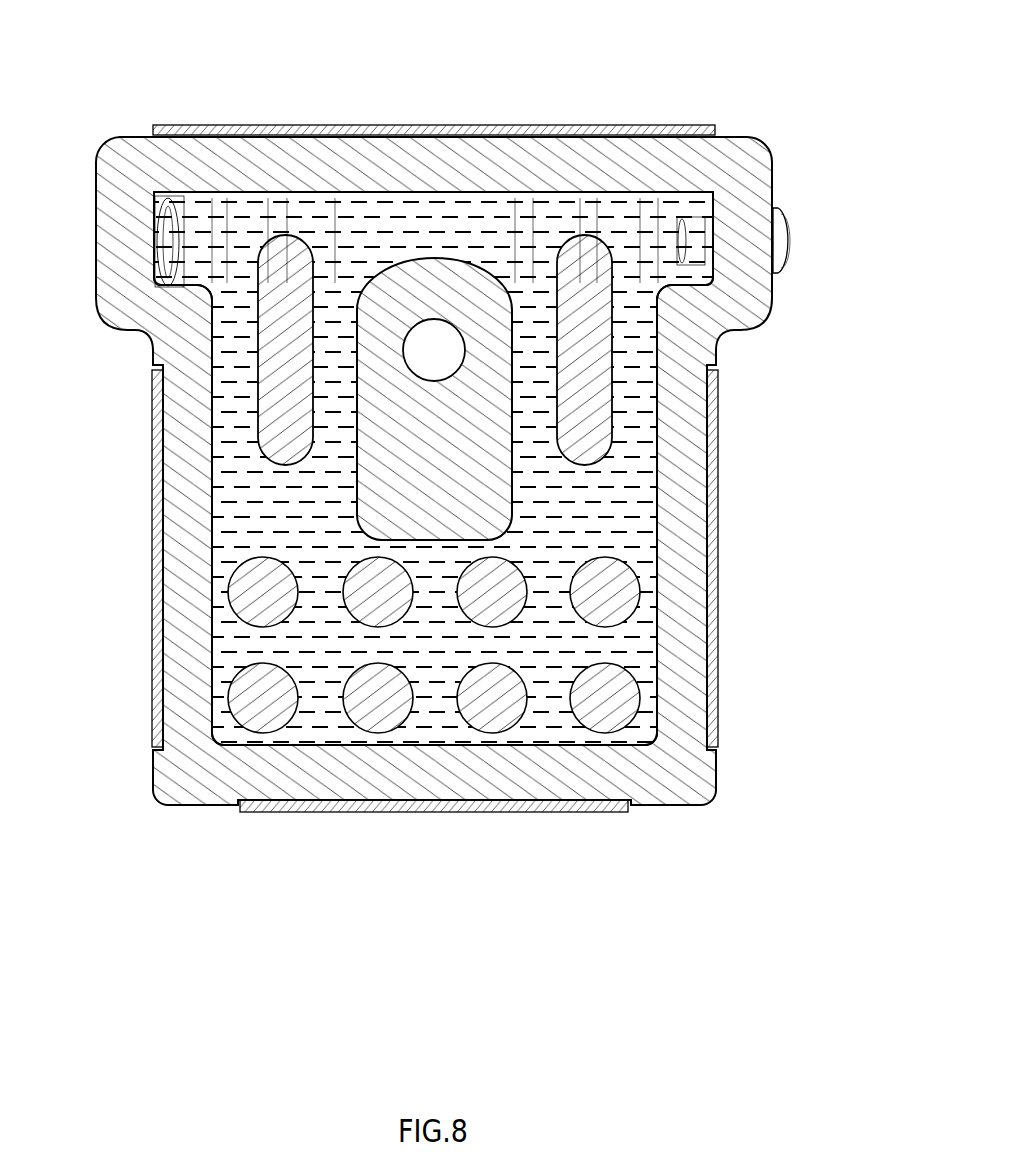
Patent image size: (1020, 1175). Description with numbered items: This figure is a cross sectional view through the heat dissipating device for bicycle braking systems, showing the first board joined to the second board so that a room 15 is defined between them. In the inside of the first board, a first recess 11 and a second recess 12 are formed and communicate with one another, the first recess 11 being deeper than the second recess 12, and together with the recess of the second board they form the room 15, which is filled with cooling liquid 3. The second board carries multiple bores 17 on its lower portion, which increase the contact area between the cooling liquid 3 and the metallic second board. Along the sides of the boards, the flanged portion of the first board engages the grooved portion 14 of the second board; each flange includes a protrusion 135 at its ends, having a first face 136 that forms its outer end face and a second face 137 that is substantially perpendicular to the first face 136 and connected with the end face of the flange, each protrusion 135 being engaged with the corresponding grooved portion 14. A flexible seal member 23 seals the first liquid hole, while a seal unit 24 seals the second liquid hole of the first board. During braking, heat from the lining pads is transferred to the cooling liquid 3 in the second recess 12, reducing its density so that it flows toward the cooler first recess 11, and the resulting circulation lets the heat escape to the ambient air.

The cooling liquid 3 is at (411, 232).
The first recess 11 is at (319, 224).
The second recess 12 is at (317, 703).
The grooved portion 14 is at (512, 125).
The room 15 is at (630, 645).
The bores 17 is at (486, 700).
The seal member 23 is at (181, 240).
The seal unit 24 is at (777, 205).
The protrusion 135 is at (153, 748).
The first face 136 is at (716, 775).
The second face 137 is at (718, 746).